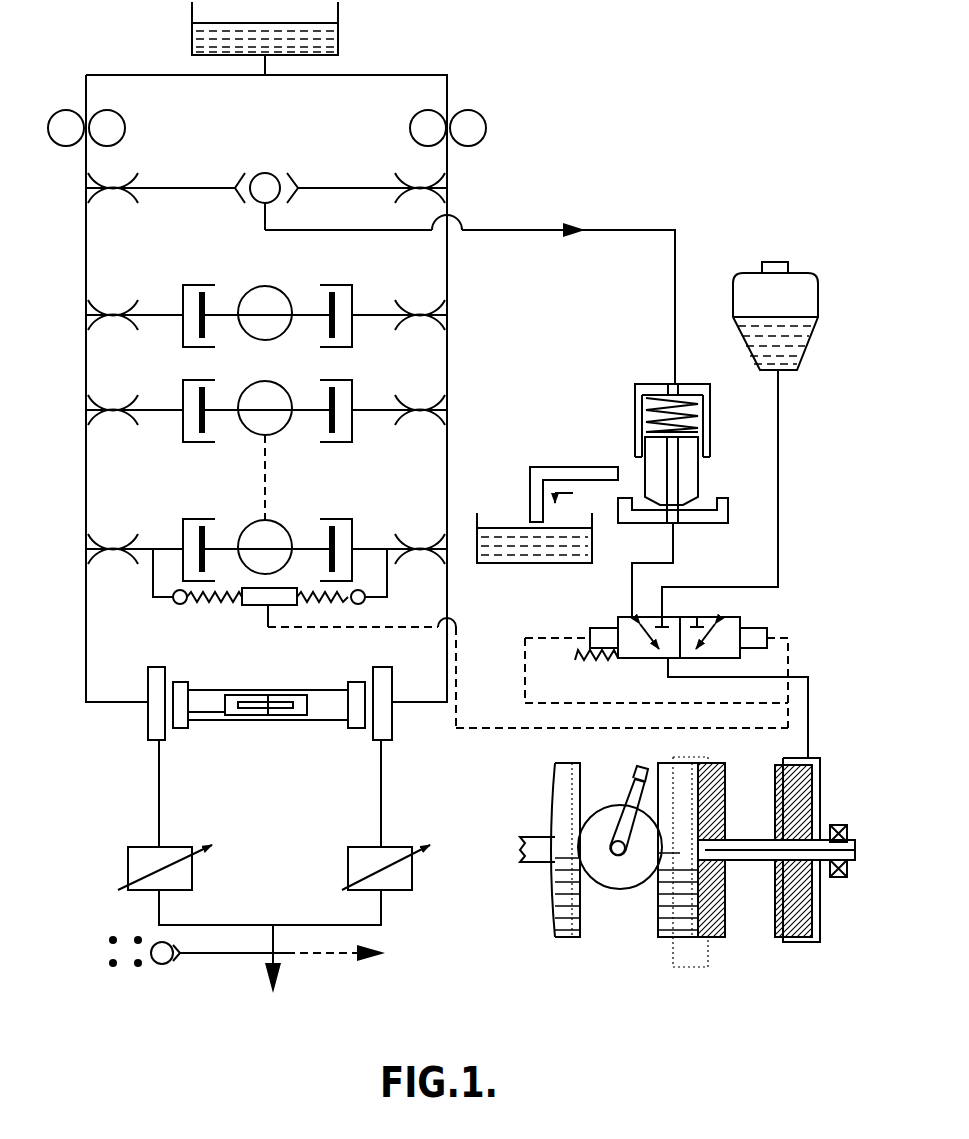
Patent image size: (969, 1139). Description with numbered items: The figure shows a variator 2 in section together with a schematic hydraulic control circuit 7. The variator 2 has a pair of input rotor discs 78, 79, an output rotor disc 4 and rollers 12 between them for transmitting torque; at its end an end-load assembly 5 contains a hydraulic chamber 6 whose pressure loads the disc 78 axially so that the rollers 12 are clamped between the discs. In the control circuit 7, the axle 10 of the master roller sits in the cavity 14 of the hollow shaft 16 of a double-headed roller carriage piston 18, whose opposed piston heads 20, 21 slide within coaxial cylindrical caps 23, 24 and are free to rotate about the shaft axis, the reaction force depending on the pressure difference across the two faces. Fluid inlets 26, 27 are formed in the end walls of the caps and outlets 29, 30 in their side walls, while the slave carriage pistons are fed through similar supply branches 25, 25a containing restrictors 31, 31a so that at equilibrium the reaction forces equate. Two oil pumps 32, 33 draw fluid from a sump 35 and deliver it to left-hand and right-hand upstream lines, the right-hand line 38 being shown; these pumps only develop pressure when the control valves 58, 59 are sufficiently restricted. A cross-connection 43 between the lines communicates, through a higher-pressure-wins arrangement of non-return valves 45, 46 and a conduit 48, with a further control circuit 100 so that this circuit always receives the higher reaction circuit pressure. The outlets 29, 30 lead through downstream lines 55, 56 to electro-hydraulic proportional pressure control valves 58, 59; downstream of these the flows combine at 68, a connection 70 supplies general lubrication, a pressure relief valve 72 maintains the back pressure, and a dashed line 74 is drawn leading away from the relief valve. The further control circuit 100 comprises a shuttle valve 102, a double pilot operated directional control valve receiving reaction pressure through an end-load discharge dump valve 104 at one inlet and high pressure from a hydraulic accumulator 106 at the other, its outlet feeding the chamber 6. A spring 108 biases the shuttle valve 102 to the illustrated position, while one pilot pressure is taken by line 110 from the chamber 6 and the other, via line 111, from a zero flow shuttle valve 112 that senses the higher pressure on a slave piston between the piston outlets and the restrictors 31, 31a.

The variator 2 is at (529, 777).
The output rotor disc 4 is at (655, 908).
The end-load assembly 5 is at (822, 770).
The hydraulic chamber 6 is at (814, 816).
The control circuit 7 is at (386, 57).
The axle 10 is at (278, 692).
The rollers 12 is at (252, 307).
The cavity 14 is at (207, 704).
The hollow shaft 16 is at (187, 682).
The roller carriage piston 18 is at (203, 281).
The piston head 20 is at (188, 719).
The piston head 21 is at (347, 719).
The cylindrical cap 23 is at (160, 666).
The cylindrical cap 24 is at (376, 666).
The supply branch 25 is at (152, 310).
The supply branch 25a is at (378, 308).
The hydraulic fluid inlet 26 is at (147, 709).
The hydraulic fluid inlet 27 is at (394, 709).
The hydraulic fluid outlet 29 is at (155, 743).
The hydraulic fluid outlet 30 is at (386, 743).
The restrictor 31 is at (114, 181).
The restrictor 31a is at (419, 175).
The oil pump 32 is at (106, 102).
The oil pump 33 is at (430, 105).
The sump 35 is at (197, 45).
The right-hand upstream flow line 38 is at (448, 373).
The cross-connection 43 is at (200, 190).
The non-return valve 45 is at (236, 182).
The non-return valve 46 is at (313, 165).
The conduit 48 is at (484, 234).
The downstream left-hand line 55 is at (157, 846).
The downstream right-hand line 56 is at (382, 845).
The pressure control valve 58 is at (128, 866).
The pressure control valve 59 is at (412, 870).
The combined fluid line 68 is at (266, 932).
The connection 70 is at (278, 948).
The pressure relief valve 72 is at (104, 955).
The vent line 74 is at (352, 948).
The input rotor disc 78 is at (773, 932).
The input rotor disc 79 is at (582, 912).
The further control circuit 100 is at (580, 601).
The shuttle valve 102 is at (755, 620).
The end-load discharge dump valve 104 is at (626, 387).
The hydraulic pressure accumulator 106 is at (818, 325).
The spring 108 is at (570, 660).
The pilot line 110 is at (524, 647).
The pilot line 111 is at (535, 728).
The zero flow shuttle valve 112 is at (258, 611).